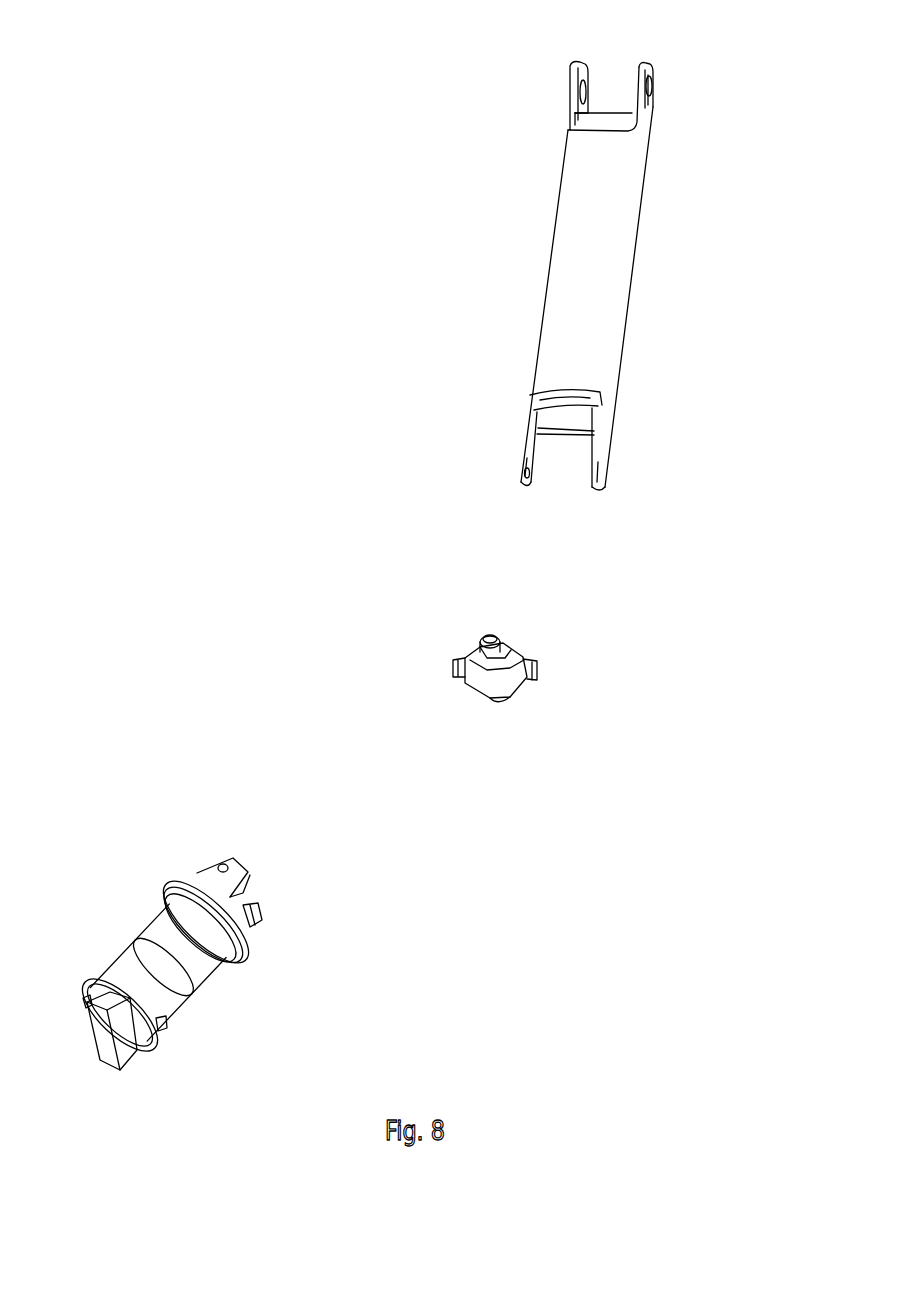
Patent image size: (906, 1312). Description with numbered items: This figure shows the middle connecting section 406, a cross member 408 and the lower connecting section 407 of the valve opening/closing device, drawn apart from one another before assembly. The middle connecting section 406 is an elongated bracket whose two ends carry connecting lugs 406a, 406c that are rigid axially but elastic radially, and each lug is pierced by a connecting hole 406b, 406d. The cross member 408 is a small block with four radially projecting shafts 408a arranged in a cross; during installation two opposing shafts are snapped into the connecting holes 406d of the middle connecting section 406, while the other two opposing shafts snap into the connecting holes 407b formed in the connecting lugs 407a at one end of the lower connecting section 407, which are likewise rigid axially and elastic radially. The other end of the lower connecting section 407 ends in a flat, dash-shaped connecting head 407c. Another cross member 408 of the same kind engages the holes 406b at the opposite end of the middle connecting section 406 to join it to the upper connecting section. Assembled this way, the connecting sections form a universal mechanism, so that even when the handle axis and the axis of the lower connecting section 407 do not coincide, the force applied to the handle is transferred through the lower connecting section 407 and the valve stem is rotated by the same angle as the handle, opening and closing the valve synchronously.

The middle connecting section 406 is at (560, 270).
The connecting lug 406a is at (570, 103).
The connecting hole 406b is at (652, 104).
The connecting lug 406c is at (525, 452).
The connecting hole 406d is at (605, 460).
The cross member 408 is at (451, 633).
The radially projecting shaft 408a is at (490, 637).
The lower connecting section 407 is at (203, 936).
The connecting lug 407a is at (228, 880).
The connecting hole 407b is at (222, 867).
The connecting head 407c is at (128, 1052).